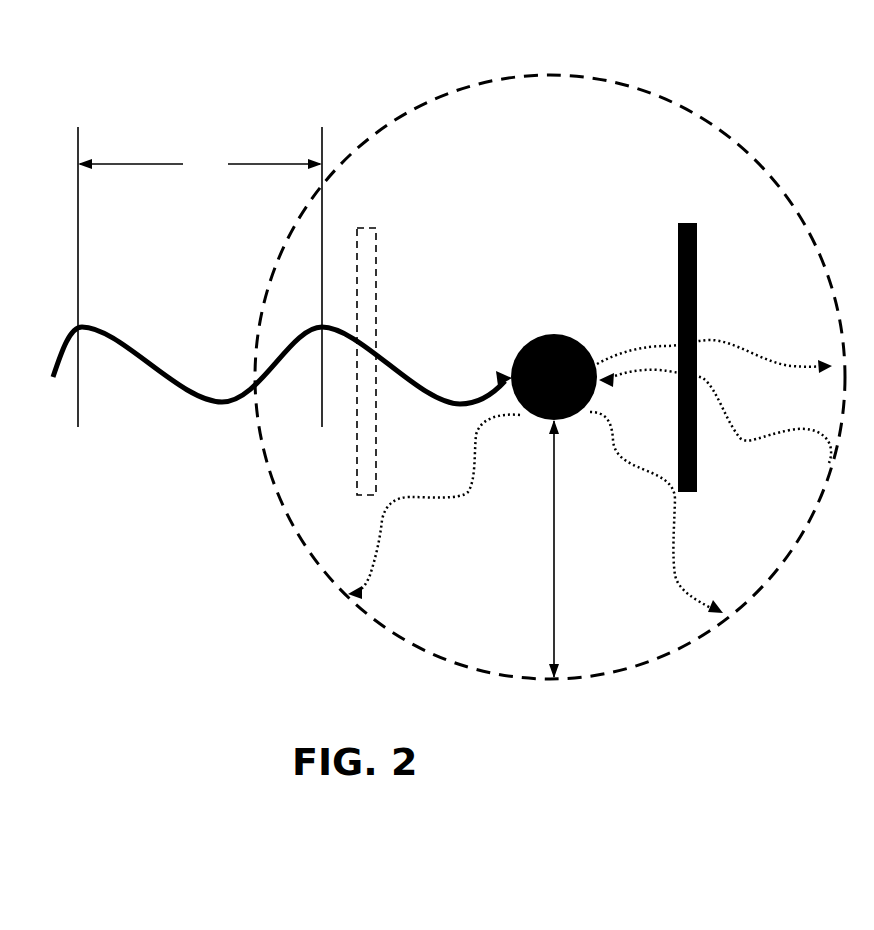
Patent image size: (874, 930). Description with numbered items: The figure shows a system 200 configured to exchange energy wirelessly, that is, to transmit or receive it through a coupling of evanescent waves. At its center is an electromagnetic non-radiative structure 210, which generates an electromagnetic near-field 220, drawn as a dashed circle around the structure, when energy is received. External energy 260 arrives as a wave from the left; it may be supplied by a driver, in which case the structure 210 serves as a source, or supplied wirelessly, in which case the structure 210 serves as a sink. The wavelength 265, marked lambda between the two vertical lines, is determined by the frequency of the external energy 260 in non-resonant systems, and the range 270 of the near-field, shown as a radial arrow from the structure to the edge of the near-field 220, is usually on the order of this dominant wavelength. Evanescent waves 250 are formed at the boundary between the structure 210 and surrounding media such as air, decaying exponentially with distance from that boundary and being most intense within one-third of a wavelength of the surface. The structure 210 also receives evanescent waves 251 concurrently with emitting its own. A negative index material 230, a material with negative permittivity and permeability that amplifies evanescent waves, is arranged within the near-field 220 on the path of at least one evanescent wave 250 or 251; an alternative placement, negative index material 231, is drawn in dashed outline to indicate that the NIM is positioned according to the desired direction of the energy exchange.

The system 200 is at (317, 830).
The electromagnetic non-radiative structure 210 is at (537, 338).
The electromagnetic near-field 220 is at (400, 118).
The negative index material 230 is at (698, 243).
The negative index material 231 is at (378, 253).
The evanescent waves 250 is at (754, 352).
The evanescent waves 251 is at (752, 440).
The energy 260 is at (252, 391).
The wavelength 265 is at (212, 127).
The range of the near-field 270 is at (549, 541).